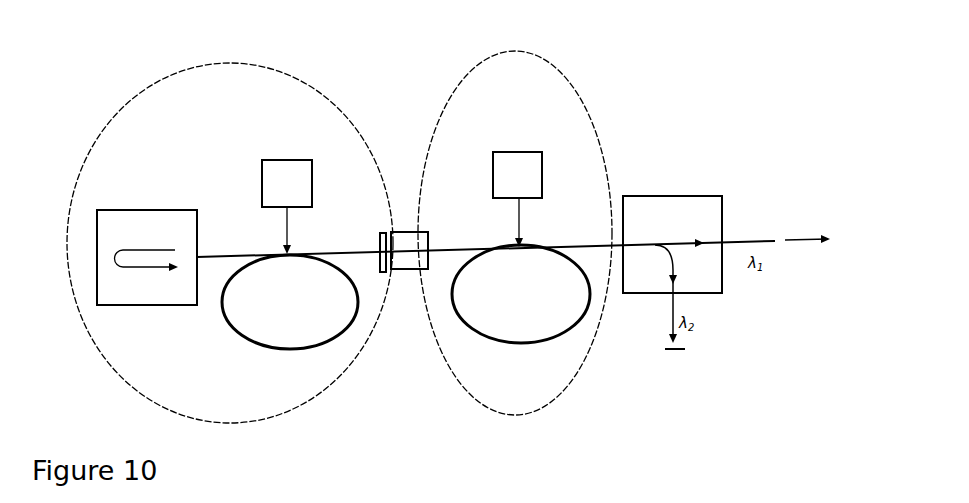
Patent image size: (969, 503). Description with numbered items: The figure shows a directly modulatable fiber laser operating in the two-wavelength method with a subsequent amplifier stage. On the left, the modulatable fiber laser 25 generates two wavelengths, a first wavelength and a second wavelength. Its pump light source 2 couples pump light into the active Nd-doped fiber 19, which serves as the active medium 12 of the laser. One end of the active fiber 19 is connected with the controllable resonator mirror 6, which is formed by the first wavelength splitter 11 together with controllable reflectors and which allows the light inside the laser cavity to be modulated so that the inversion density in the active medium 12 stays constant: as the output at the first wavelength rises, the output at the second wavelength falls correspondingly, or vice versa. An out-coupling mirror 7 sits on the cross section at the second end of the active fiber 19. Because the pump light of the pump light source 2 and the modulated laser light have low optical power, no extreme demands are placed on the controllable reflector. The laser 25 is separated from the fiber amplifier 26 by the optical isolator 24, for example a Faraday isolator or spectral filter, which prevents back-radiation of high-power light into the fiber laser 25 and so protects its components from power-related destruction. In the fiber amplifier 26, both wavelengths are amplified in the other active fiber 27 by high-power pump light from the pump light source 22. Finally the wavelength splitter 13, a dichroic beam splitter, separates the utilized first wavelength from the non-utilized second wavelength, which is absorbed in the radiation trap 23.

The pump light source 2 is at (288, 158).
The controllable resonator mirror 6 is at (158, 220).
The first wavelength splitter 11 is at (157, 210).
The out-coupling mirror 7 is at (381, 275).
The active medium 12 is at (298, 258).
The active Nd-doped fiber 19 is at (326, 243).
The wavelength splitter 13 is at (660, 196).
The pump light source 22 is at (523, 152).
The radiation trap 23 is at (674, 352).
The optical isolator 24 is at (408, 232).
The modulatable fiber laser 25 is at (323, 90).
The fiber amplifier 26 is at (570, 88).
The active fiber 27 is at (560, 244).